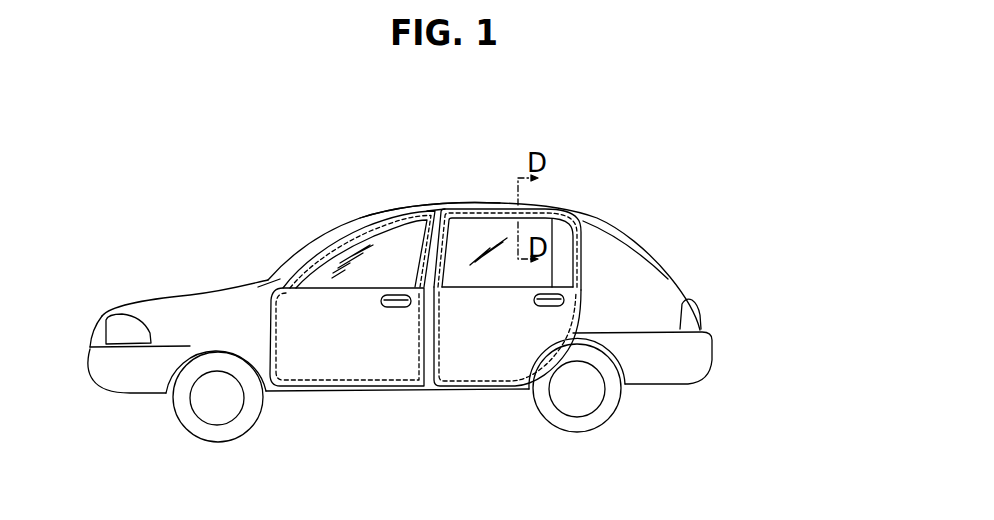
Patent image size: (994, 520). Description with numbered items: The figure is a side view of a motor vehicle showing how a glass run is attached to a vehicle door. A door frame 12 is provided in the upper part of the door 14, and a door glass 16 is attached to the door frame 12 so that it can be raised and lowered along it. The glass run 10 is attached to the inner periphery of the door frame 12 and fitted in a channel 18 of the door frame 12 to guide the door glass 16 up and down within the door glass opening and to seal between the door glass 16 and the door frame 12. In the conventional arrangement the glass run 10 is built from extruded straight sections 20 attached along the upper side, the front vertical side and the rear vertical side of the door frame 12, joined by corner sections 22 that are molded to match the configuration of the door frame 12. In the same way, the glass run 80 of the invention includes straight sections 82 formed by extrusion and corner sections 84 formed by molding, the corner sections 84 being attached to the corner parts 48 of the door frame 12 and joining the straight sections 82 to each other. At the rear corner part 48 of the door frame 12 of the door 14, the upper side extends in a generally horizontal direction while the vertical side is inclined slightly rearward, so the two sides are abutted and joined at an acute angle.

The glass run 10 is at (492, 249).
The door frame 12 is at (360, 281).
The vehicle door 14 is at (355, 357).
The door glass 16 is at (318, 281).
The channel 18 is at (408, 211).
The extruded straight sections 20 is at (614, 249).
The corner sections 22 is at (353, 254).
The corner part 48 is at (455, 204).
The glass run 80 is at (343, 230).
The straight sections 82 is at (492, 207).
The corner sections 84 is at (430, 204).